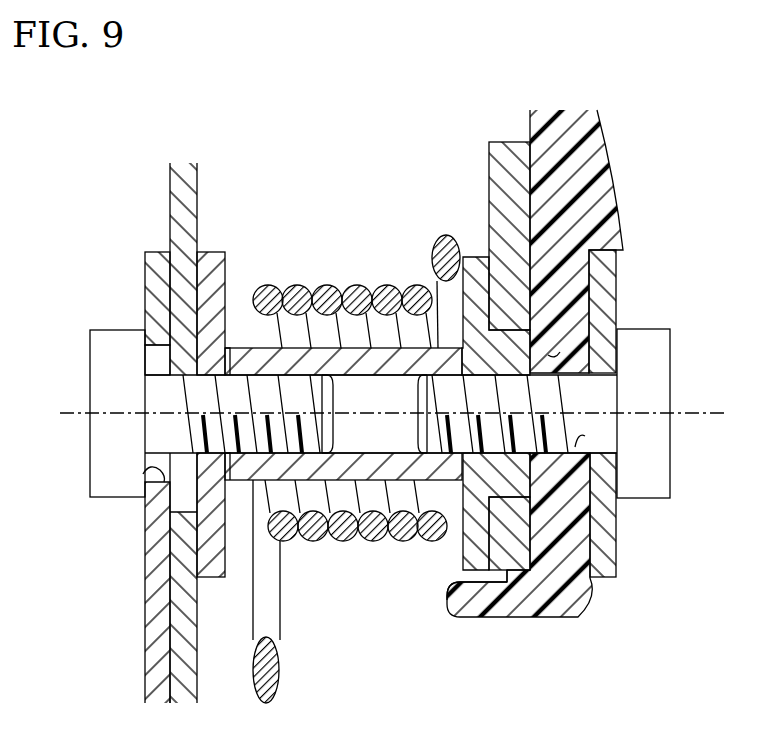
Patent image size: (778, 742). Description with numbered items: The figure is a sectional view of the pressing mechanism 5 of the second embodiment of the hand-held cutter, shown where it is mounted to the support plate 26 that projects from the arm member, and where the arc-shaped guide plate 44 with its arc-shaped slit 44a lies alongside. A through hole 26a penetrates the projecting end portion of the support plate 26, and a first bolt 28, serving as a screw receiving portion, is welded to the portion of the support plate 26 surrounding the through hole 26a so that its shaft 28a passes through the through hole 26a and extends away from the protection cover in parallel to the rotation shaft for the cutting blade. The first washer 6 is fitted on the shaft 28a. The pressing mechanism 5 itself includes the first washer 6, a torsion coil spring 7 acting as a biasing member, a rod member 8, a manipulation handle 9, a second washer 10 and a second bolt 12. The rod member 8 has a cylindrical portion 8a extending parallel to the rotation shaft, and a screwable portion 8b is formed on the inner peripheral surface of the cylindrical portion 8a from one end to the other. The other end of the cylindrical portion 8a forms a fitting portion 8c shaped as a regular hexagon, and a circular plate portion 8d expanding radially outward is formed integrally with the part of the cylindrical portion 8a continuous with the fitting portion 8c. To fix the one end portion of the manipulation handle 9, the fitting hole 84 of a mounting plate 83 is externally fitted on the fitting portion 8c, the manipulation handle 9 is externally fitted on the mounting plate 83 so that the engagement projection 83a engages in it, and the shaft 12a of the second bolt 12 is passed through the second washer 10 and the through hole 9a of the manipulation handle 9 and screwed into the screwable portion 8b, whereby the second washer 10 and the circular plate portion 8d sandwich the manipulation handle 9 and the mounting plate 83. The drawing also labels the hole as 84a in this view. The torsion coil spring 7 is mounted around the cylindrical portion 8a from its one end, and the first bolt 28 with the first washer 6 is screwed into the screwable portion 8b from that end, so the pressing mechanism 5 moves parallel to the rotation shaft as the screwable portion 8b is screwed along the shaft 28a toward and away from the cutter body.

The pressing mechanism 5 is at (341, 138).
The first washer 6 is at (214, 247).
The torsion coil spring 7 is at (328, 282).
The rod member 8 is at (443, 473).
The cylindrical portion 8a is at (397, 545).
The screwable portion 8b is at (395, 378).
The fitting portion 8c is at (535, 500).
The circular plate portion 8d is at (470, 550).
The manipulation handle 9 is at (625, 205).
The through hole 9a is at (585, 436).
The second washer 10 is at (624, 276).
The second bolt 12 is at (656, 326).
The shaft 12a is at (560, 352).
The support plate 26 is at (140, 614).
The through hole 26a is at (143, 474).
The first bolt 28 is at (98, 324).
The shaft 28a is at (231, 370).
The guide plate 44 is at (164, 176).
The slit 44a is at (162, 328).
The mounting plate 83 is at (500, 582).
The engagement projection 83a is at (496, 150).
The fitting hole 84 is at (537, 478).
The cam follower flange 84a is at (554, 630).